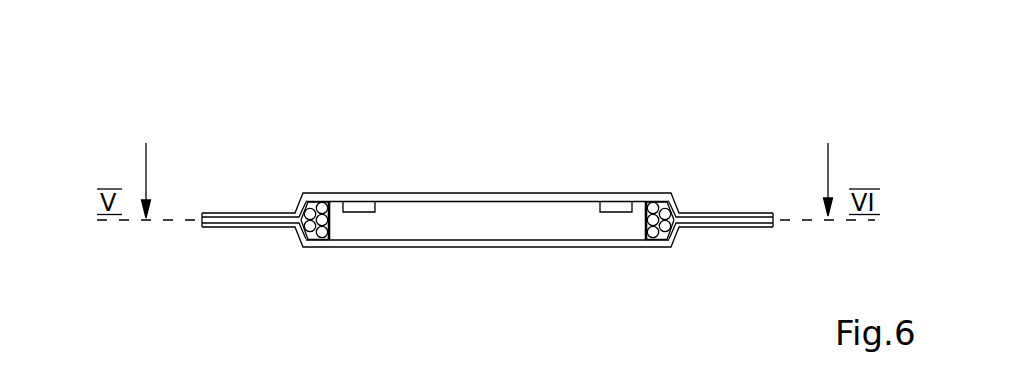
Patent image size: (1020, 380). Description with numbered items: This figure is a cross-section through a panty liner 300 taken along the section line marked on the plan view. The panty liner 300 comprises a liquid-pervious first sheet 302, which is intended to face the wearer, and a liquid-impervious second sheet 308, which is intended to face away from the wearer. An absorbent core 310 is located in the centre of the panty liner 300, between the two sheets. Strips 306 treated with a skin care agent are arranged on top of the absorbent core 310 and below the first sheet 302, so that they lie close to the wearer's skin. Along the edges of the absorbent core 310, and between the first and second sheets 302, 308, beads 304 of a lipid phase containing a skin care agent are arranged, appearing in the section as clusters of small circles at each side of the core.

The panty liner 300 is at (723, 212).
The liquid-pervious first sheet 302 is at (467, 200).
The beads 304 is at (314, 231).
The strips 306 is at (358, 203).
The liquid-impervious second sheet 308 is at (425, 249).
The absorbent core 310 is at (500, 228).